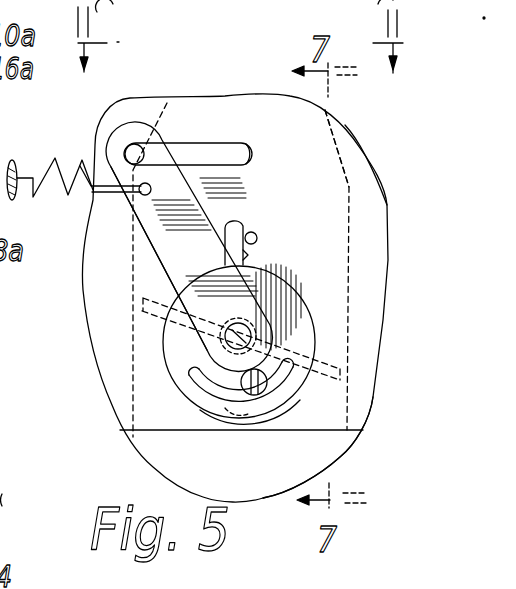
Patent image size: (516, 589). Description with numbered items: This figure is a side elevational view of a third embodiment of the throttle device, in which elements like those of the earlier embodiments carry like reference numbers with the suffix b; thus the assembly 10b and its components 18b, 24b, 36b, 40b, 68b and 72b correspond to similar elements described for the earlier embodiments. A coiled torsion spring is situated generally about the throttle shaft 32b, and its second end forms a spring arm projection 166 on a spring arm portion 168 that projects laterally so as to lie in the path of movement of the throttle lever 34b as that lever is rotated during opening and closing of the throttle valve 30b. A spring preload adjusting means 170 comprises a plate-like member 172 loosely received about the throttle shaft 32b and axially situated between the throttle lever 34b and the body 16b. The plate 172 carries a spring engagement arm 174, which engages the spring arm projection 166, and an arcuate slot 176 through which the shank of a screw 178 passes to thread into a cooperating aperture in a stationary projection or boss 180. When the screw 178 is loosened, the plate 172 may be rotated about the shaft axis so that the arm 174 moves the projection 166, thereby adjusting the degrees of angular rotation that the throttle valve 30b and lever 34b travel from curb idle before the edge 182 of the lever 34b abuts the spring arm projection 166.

The hold-down assembly 10b is at (268, 86).
The body 16b is at (360, 147).
The cover plate 18b is at (340, 190).
The mounting plate 24b is at (347, 447).
The throttle valve 30b is at (131, 305).
The throttle shaft 32b is at (251, 329).
The throttle lever 34b is at (152, 274).
The arm edge 36b is at (160, 245).
The roller 40b is at (193, 154).
The link rod 68b is at (74, 198).
The spring 72b is at (17, 168).
The spring arm projection 166 is at (256, 236).
The spring arm portion 168 is at (246, 255).
The spring preload adjusting means 170 is at (291, 424).
The plate-like member 172 is at (155, 328).
The spring engagement arm 174 is at (243, 222).
The arcuate slot 176 is at (199, 377).
The screw 178 is at (266, 410).
The stationary projection or boss 180 is at (237, 410).
The edge of lever 182 is at (223, 181).